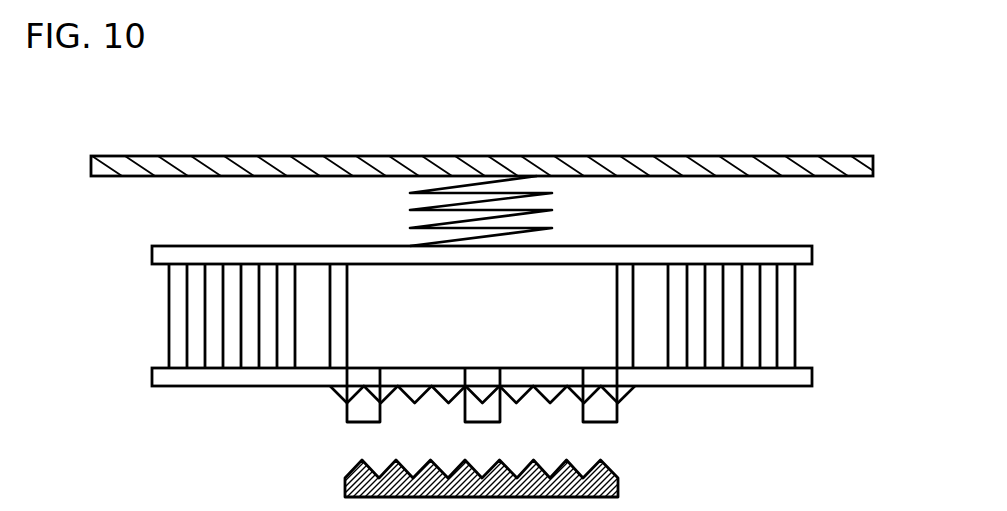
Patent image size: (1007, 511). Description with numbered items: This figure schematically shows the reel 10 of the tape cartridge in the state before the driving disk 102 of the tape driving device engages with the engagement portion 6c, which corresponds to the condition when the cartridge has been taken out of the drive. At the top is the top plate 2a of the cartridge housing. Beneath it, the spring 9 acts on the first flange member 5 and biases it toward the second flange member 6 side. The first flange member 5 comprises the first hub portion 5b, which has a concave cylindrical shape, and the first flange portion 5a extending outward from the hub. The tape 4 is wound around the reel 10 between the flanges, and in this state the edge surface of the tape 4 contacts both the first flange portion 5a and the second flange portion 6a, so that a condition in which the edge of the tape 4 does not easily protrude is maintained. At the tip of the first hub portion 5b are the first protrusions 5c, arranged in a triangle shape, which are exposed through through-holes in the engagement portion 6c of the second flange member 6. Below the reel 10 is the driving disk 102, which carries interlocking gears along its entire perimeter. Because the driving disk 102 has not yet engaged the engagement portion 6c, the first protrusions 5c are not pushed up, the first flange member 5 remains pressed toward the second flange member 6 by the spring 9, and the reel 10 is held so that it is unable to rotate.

The top plate 2a is at (760, 156).
The spring 9 is at (552, 210).
The first hub portion 5b is at (384, 290).
The first flange member 5 is at (813, 251).
The first flange portion 5a is at (158, 253).
The tape 4 is at (787, 308).
The second flange member 6 is at (813, 374).
The second flange portion 6a is at (152, 372).
The engagement portion 6c is at (333, 392).
The first protrusions 5c is at (346, 415).
The driving disk 102 is at (618, 483).
The reel 10 is at (833, 409).